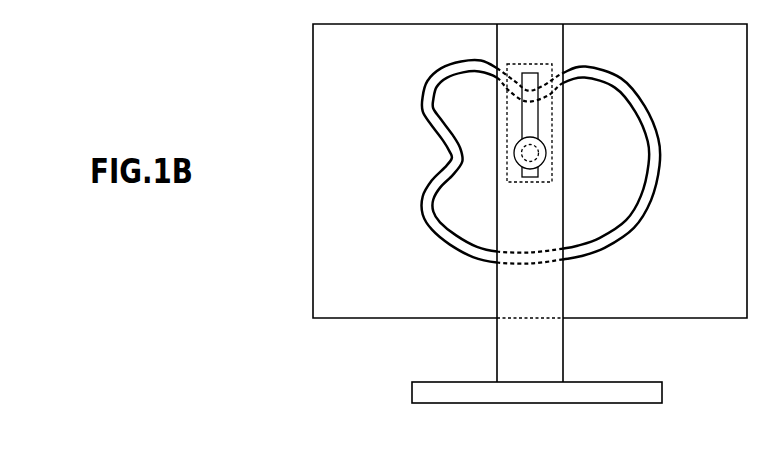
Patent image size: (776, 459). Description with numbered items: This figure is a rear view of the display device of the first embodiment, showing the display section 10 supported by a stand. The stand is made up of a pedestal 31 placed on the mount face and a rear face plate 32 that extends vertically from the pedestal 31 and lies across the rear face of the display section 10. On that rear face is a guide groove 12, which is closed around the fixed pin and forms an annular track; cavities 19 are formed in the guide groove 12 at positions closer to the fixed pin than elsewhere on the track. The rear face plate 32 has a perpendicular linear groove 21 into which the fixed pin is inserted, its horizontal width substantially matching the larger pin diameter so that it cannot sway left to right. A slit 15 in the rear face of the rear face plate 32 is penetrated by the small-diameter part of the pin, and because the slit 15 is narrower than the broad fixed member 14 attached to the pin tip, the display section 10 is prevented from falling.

The display section 10 is at (393, 317).
The guide groove 12 is at (618, 76).
The fixed member 14 is at (543, 135).
The slit 15 is at (538, 197).
The cavities 19 is at (514, 81).
The linear groove 21 is at (507, 124).
The pedestal 31 is at (662, 388).
The rear face plate 32 is at (564, 282).